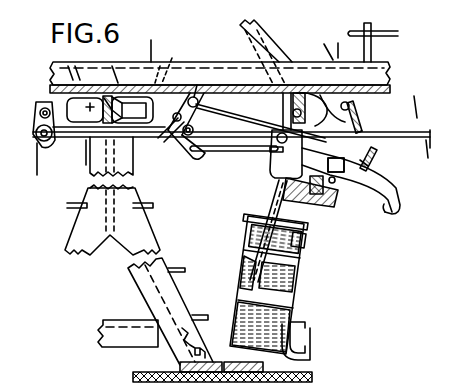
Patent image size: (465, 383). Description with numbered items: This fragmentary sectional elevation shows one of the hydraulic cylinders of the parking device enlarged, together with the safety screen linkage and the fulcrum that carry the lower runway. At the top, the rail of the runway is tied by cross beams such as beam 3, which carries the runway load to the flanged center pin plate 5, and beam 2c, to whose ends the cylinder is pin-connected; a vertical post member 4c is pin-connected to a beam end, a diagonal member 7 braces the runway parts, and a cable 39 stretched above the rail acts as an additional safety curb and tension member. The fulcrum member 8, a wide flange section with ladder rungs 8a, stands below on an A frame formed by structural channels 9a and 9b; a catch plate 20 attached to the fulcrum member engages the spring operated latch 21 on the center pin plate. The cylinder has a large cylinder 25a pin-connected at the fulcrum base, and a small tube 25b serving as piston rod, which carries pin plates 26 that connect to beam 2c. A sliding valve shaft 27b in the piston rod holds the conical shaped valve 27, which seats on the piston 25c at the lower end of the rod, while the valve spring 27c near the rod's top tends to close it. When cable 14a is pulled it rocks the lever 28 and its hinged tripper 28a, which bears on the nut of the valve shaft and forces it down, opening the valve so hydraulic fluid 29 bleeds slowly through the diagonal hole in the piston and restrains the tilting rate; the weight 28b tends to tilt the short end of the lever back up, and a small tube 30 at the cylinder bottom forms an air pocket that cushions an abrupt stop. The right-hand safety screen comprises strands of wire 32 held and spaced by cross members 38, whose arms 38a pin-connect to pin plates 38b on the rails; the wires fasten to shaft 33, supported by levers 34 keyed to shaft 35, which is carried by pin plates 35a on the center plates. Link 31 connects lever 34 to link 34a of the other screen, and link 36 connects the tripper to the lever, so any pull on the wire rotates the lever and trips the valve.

The flanged center pin plate 5 is at (151, 41).
The catch plate 20 is at (171, 60).
The spring operated latch 21 is at (118, 76).
The diagonal member 7 is at (262, 27).
The vertical link or post member 4c is at (323, 40).
The cable 39 is at (386, 41).
The cross beam 3 is at (110, 109).
The cross beam 2c is at (243, 100).
The shaft 33 is at (46, 143).
The shaft 35 is at (46, 101).
The pin plate 35a is at (190, 118).
The strand of wire 32 is at (222, 145).
The lever 34 is at (186, 157).
The link 34a is at (45, 169).
The link 36 is at (212, 152).
The link 31 is at (79, 163).
The fulcrum member 8 is at (133, 172).
The ladder rung 8a is at (68, 207).
The structural channel 9a is at (68, 236).
The structural channel 9b is at (116, 321).
The pin plate 26 is at (273, 152).
The valve spring 27c is at (275, 182).
The conical shaped valve 27 is at (240, 296).
The sliding valve shaft 27b is at (302, 243).
The lever 28 is at (352, 186).
The hinged tripper 28a is at (305, 150).
The weight 28b is at (392, 215).
The cable 14a is at (366, 167).
The cross member 38 is at (370, 136).
The arm 38a is at (361, 131).
The pin plate 38b is at (350, 106).
The large cylinder 25a is at (256, 251).
The small tube 25b is at (262, 227).
The piston 25c is at (288, 300).
The hydraulic fluid 29 is at (244, 283).
The small tube 30 is at (300, 342).